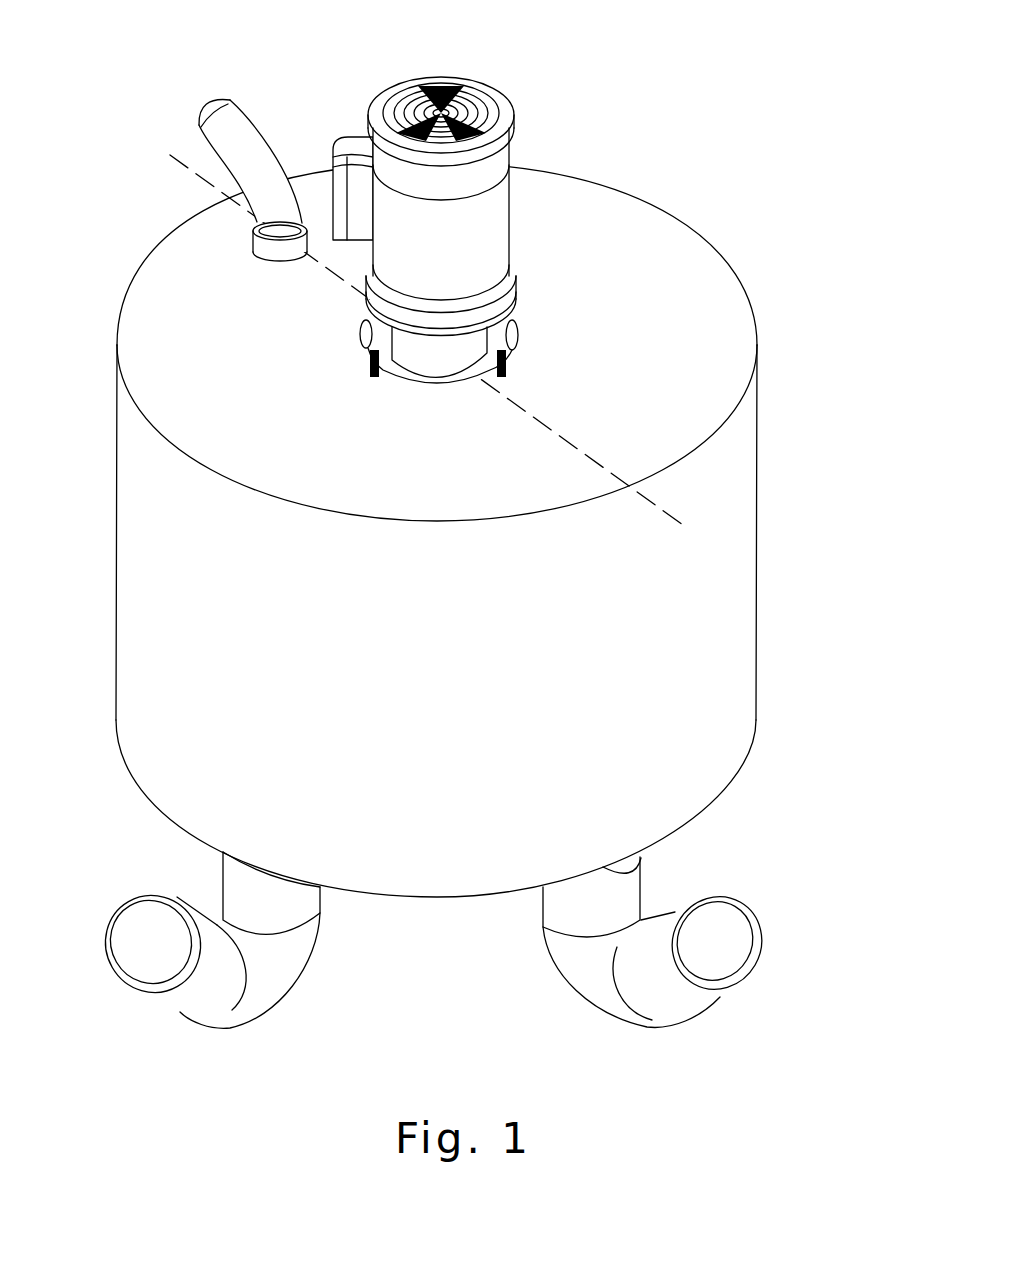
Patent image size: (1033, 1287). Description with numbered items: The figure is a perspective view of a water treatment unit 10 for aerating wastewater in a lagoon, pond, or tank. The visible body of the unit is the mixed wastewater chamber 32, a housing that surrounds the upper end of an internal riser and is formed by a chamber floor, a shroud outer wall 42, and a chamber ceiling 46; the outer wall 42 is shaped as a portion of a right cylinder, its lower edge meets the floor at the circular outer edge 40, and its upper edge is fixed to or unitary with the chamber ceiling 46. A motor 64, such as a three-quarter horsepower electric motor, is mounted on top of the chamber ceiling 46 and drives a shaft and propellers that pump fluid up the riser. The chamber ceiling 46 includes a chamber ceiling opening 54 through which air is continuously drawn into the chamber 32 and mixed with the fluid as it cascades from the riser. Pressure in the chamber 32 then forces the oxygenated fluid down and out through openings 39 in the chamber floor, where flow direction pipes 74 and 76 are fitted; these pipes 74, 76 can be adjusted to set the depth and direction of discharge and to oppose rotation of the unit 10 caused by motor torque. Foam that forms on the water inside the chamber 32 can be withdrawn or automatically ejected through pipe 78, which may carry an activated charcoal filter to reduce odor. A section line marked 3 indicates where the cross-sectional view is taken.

The water treatment unit 10 is at (730, 160).
The mixed wastewater chamber 32 is at (493, 530).
The outer edge 40 is at (750, 750).
The shroud outer wall 42 is at (737, 557).
The chamber ceiling 46 is at (710, 280).
The chamber ceiling opening 54 is at (510, 337).
The motor 64 is at (477, 93).
The flow direction pipe 74 is at (285, 887).
The flow direction pipe 76 is at (223, 973).
The pipe 78 is at (253, 135).
The openings 39 is at (253, 870).
The section line 3- 3 is at (178, 132).